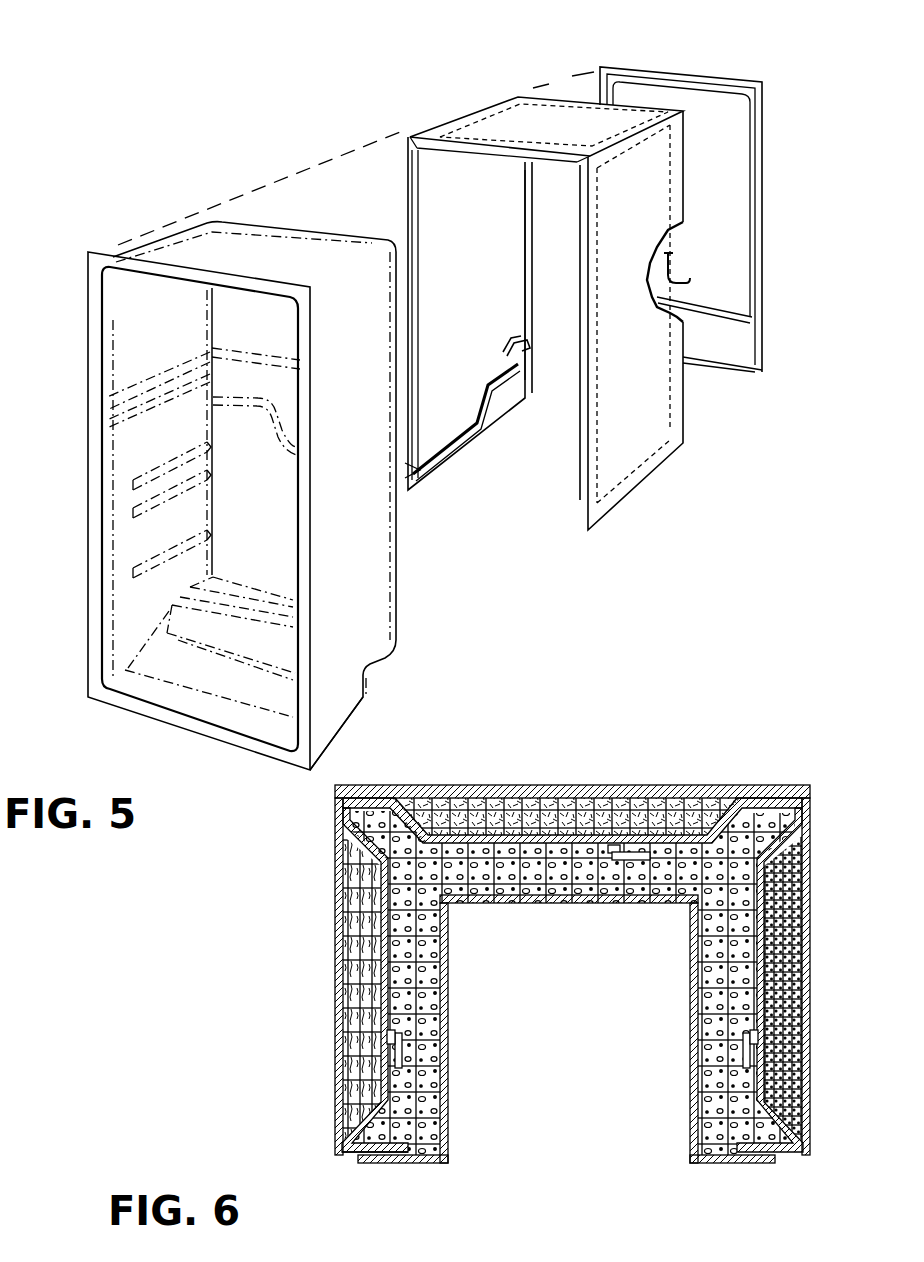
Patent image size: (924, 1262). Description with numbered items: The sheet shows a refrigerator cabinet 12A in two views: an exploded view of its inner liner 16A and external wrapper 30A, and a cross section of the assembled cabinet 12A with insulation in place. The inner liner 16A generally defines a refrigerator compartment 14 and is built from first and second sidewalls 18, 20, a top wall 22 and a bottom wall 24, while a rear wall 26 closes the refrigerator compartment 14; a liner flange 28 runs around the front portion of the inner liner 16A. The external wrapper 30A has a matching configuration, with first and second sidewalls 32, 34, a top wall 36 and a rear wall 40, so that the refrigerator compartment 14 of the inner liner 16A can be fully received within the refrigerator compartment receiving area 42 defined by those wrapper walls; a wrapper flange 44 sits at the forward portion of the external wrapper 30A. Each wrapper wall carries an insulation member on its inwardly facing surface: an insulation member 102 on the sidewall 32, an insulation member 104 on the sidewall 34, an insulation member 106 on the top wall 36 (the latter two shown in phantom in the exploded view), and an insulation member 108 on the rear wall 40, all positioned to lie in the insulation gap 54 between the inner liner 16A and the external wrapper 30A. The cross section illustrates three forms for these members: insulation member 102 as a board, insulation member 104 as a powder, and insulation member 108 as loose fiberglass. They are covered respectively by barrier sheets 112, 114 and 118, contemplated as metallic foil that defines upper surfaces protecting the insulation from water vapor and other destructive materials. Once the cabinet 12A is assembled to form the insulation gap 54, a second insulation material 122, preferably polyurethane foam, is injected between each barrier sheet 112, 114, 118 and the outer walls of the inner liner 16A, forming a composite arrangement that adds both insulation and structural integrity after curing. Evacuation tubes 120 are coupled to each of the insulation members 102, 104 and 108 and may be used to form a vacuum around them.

In FIG. 5, the cabinet 12A is at (422, 103).
In FIG. 6, the cabinet 12A is at (690, 770).
In FIG. 5, the refrigerator compartment 14 is at (143, 619).
In FIG. 6, the refrigerator compartment 14 is at (590, 1056).
In FIG. 5, the inner liner 16A is at (152, 213).
In FIG. 6, the inner liner 16A is at (553, 907).
In FIG. 5, the first sidewall 18 is at (120, 336).
In FIG. 6, the first sidewall 18 is at (448, 997).
In FIG. 5, the second sidewall 20 is at (362, 548).
In FIG. 6, the second sidewall 20 is at (690, 1007).
In FIG. 5, the top wall 22 is at (248, 240).
In FIG. 5, the bottom wall 24 is at (198, 673).
In FIG. 5, the rear wall 26 is at (240, 500).
In FIG. 6, the rear wall 26 is at (580, 903).
In FIG. 5, the liner flange 28 is at (303, 578).
In FIG. 6, the liner flange 28 is at (398, 1163).
In FIG. 5, the external wrapper 30A is at (500, 106).
In FIG. 6, the external wrapper 30A is at (330, 948).
In FIG. 5, the first sidewall 32 is at (405, 178).
In FIG. 6, the first sidewall 32 is at (340, 997).
In FIG. 5, the second sidewall 34 is at (655, 413).
In FIG. 6, the second sidewall 34 is at (805, 1033).
In FIG. 5, the top wall 36 is at (545, 117).
In FIG. 6, the top wall 36 is at (572, 820).
In FIG. 5, the rear wall 40 is at (763, 253).
In FIG. 6, the rear wall 40 is at (578, 785).
In FIG. 5, the refrigerator compartment receiving area 42 is at (524, 472).
In FIG. 5, the wrapper flange 44 is at (407, 232).
In FIG. 6, the wrapper flange 44 is at (375, 1158).
In FIG. 6, the insulation gap 54 is at (710, 870).
In FIG. 5, the insulation member 102 is at (488, 208).
In FIG. 6, the insulation member 102 is at (372, 1055).
In FIG. 5, the insulation member 104 is at (637, 443).
In FIG. 6, the insulation member 104 is at (777, 920).
In FIG. 5, the insulation member 106 is at (586, 123).
In FIG. 5, the insulation member 108 is at (727, 207).
In FIG. 6, the insulation member 108 is at (465, 812).
In FIG. 6, the barrier sheet 112 is at (387, 965).
In FIG. 6, the barrier sheet 114 is at (758, 1015).
In FIG. 6, the barrier sheet 118 is at (473, 843).
In FIG. 5, the evacuation tube 120 is at (527, 347).
In FIG. 6, the evacuation tube 120 is at (628, 862).
In FIG. 6, the second insulation material 122 is at (412, 890).